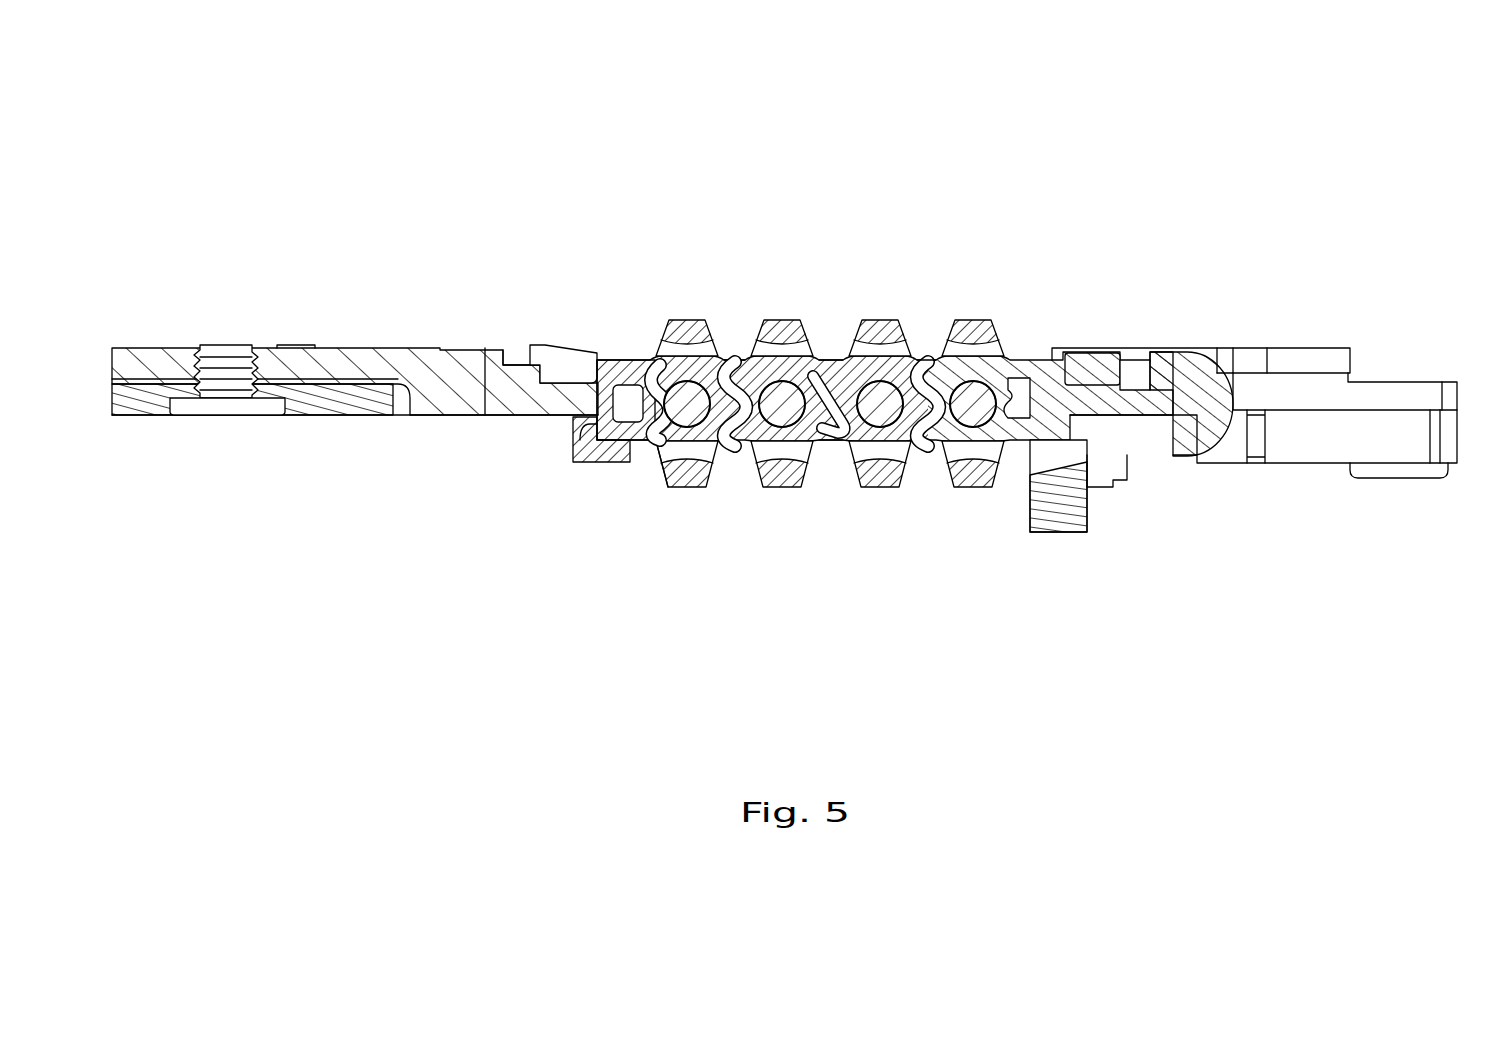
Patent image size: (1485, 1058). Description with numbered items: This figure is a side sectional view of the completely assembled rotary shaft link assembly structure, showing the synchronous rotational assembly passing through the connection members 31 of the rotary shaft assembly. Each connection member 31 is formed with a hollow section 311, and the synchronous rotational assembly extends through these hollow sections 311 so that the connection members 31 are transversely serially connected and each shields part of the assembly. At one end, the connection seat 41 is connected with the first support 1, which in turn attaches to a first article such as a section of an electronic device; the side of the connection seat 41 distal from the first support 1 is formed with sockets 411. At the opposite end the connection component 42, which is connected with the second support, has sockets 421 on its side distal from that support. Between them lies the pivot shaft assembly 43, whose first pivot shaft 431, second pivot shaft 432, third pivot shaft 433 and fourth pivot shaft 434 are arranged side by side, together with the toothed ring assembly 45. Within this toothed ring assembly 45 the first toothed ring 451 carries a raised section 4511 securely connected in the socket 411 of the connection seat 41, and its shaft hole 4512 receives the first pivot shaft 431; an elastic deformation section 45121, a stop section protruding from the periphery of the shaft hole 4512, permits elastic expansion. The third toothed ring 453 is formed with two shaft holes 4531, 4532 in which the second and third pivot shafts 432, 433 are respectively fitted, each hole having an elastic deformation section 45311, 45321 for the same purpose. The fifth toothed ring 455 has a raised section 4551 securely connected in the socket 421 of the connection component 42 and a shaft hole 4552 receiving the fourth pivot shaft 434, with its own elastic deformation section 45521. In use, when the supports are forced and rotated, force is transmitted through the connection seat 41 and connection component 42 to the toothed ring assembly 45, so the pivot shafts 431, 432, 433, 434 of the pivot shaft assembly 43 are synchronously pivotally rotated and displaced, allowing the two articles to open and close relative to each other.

The first support 1 is at (340, 417).
The connection member 31 is at (717, 370).
The hollow section 311 is at (735, 345).
The connection seat 41 is at (360, 352).
The socket 411 is at (520, 352).
The connection component 42 is at (1210, 395).
The socket 421 is at (1138, 365).
The pivot shaft assembly 43 is at (832, 269).
The first pivot shaft 431 is at (683, 400).
The second pivot shaft 432 is at (782, 400).
The third pivot shaft 433 is at (880, 400).
The fourth pivot shaft 434 is at (975, 305).
The toothed ring assembly 45 is at (886, 432).
The first toothed ring 451 is at (630, 362).
The raised section 4511 is at (548, 353).
The shaft hole 4512 is at (680, 457).
The elastic deformation section 45121 is at (656, 462).
The third toothed ring 453 is at (925, 360).
The shaft hole 4531 is at (772, 432).
The elastic deformation section 45311 is at (833, 385).
The shaft hole 4532 is at (887, 460).
The elastic deformation section 45321 is at (827, 445).
The fifth toothed ring 455 is at (1120, 407).
The raised section 4551 is at (1150, 370).
The shaft hole 4552 is at (963, 432).
The elastic deformation section 45521 is at (1022, 395).